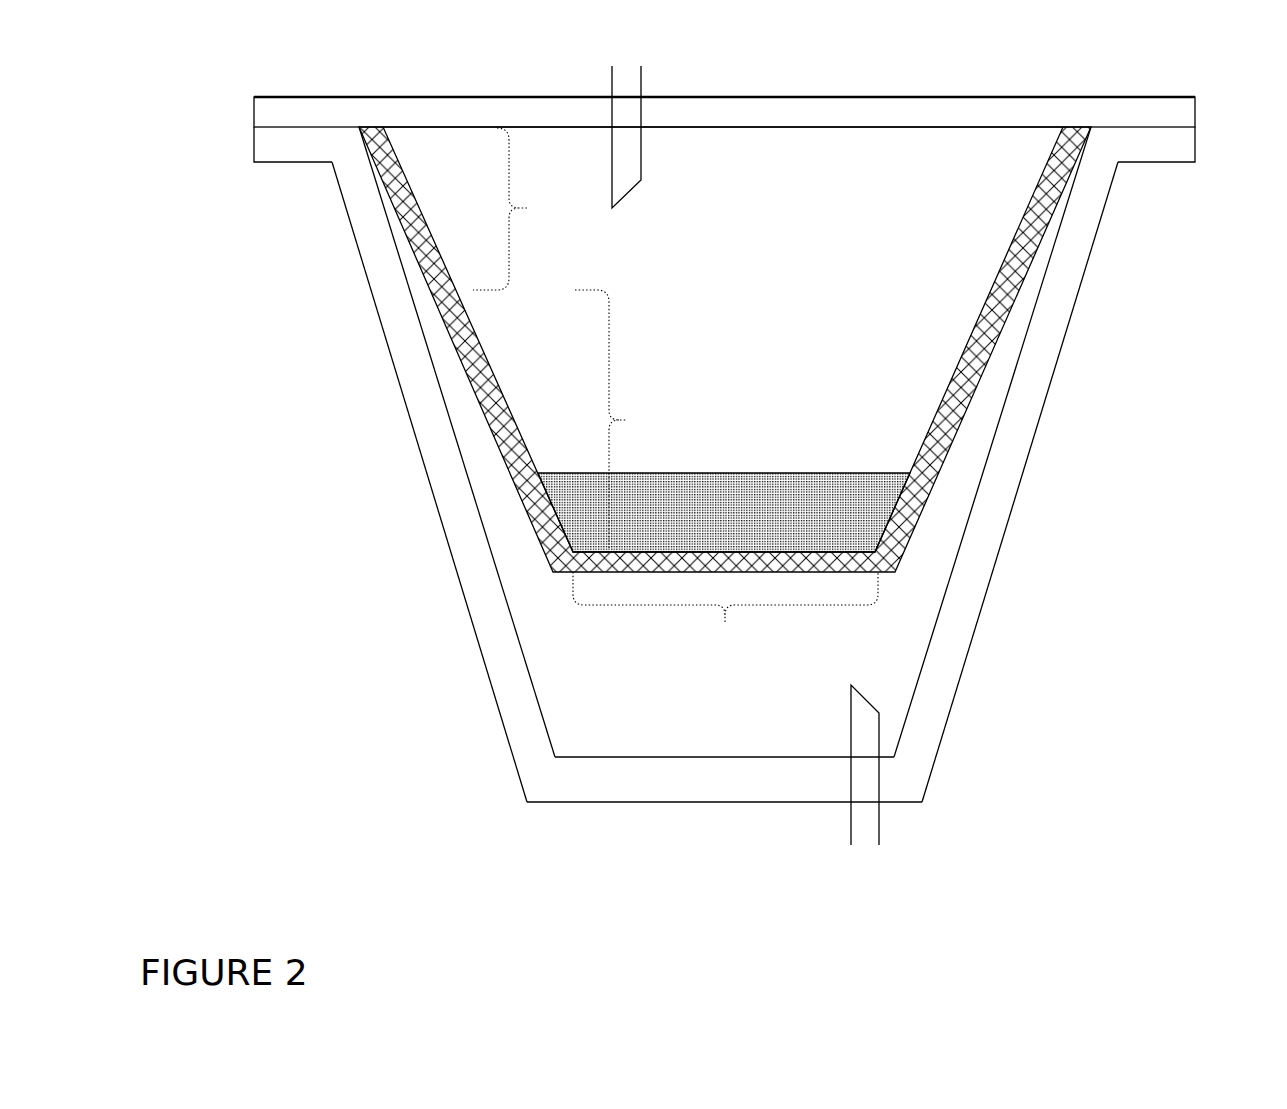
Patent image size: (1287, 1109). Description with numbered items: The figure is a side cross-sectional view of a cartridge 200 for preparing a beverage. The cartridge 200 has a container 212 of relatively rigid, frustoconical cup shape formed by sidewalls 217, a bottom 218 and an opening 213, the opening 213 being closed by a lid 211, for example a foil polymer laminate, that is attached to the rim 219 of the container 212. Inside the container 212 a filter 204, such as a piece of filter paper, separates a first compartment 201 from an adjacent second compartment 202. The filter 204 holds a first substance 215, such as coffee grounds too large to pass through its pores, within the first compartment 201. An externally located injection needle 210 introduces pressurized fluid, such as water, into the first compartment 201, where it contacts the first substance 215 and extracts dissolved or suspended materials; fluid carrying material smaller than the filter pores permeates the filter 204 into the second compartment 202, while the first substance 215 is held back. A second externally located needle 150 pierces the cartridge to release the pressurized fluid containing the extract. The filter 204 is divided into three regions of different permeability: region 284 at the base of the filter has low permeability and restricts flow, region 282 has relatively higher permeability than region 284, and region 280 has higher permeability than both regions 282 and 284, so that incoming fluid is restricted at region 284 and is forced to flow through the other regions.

The cartridge 200 is at (758, 461).
The lid 211 is at (1130, 110).
The rim 219 is at (1153, 148).
The container 212 is at (360, 268).
The opening 213 is at (777, 133).
The sidewalls 217 is at (738, 464).
The bottom 218 is at (602, 775).
The first compartment 201 is at (798, 411).
The second compartment 202 is at (635, 634).
The filter 204 is at (995, 342).
The first substance 215 is at (840, 512).
The injection needle 210 is at (641, 180).
The second externally located needle 150 is at (879, 825).
The region 280 is at (525, 209).
The region 282 is at (626, 419).
The region 284 is at (725, 611).